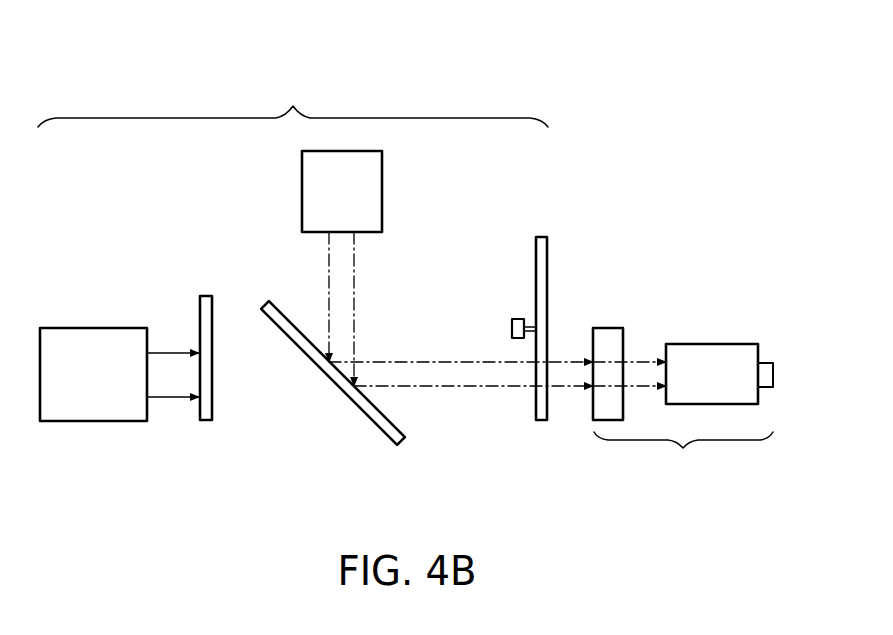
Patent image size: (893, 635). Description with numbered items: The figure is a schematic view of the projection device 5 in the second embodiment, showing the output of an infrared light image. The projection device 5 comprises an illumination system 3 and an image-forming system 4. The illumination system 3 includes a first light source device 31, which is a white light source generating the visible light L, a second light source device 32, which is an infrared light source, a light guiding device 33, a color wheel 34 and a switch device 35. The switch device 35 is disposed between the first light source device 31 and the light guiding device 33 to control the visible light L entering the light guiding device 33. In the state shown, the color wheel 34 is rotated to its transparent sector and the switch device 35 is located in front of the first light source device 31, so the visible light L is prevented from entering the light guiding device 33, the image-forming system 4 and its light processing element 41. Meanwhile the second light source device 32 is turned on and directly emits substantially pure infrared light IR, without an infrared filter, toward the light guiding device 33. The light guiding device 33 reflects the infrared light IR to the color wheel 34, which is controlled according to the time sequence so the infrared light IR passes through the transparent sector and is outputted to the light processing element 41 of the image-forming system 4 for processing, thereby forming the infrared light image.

The projection device 5 is at (645, 53).
The illumination system 3 is at (285, 101).
The first light source device 31 is at (92, 378).
The second light source device 32 is at (302, 185).
The light guiding device 33 is at (373, 410).
The color wheel 34 is at (543, 255).
The switch device 35 is at (198, 313).
The image-forming system 4 is at (675, 478).
The light processing element 41 is at (608, 340).
The visible light L is at (177, 404).
The infrared light IR is at (365, 282).